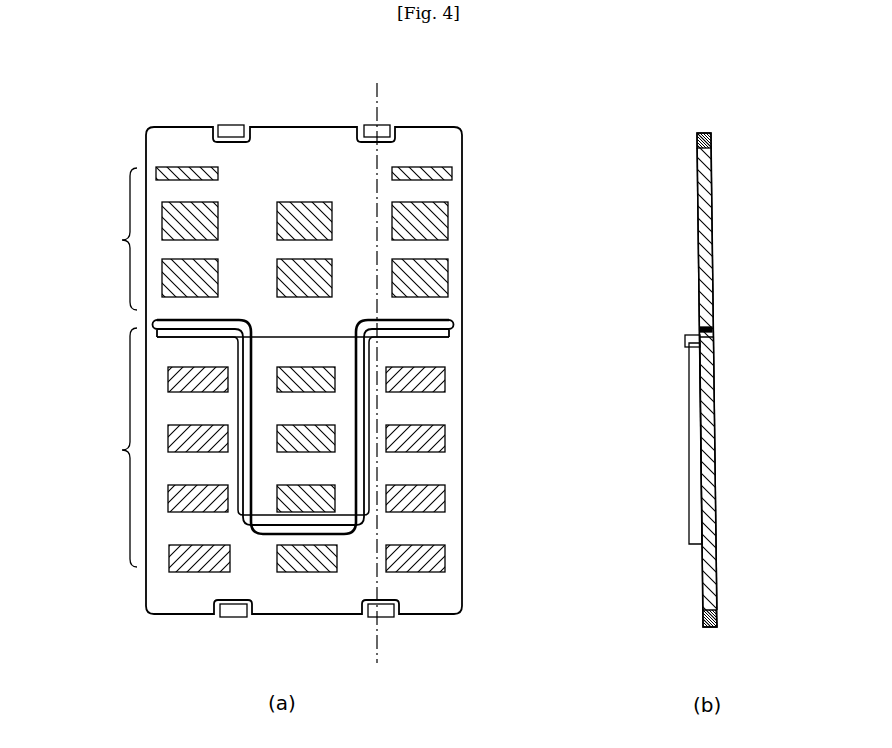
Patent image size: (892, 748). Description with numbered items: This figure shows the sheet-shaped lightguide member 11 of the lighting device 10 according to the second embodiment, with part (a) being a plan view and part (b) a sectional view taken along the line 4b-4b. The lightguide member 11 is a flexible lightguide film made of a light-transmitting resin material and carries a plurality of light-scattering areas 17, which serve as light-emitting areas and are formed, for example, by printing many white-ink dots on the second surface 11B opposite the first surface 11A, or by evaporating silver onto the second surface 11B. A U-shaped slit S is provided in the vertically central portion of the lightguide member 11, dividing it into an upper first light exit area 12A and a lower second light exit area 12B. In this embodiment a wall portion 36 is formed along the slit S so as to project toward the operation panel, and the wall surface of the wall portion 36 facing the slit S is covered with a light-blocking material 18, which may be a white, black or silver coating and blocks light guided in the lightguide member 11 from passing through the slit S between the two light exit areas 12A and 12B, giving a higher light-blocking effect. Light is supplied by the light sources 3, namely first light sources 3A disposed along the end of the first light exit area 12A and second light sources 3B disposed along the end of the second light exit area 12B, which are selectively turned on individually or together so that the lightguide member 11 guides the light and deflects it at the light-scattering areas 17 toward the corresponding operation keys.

The light sources 3 is at (436, 381).
The first light sources 3A is at (228, 124).
The second light sources 3B is at (231, 619).
The light-scattering areas 17 is at (300, 207).
The line 4b- 4b is at (378, 89).
The sheet-shaped lightguide member 11 is at (463, 280).
The first surface 11A is at (698, 253).
The second surface 11B is at (713, 288).
The U-shaped slit S is at (457, 315).
The wall portion 36 is at (430, 337).
The light-blocking material 18 is at (697, 330).
The first light exit area 12A is at (106, 239).
The second light exit area 12B is at (106, 447).
The lighting device 10 is at (774, 165).